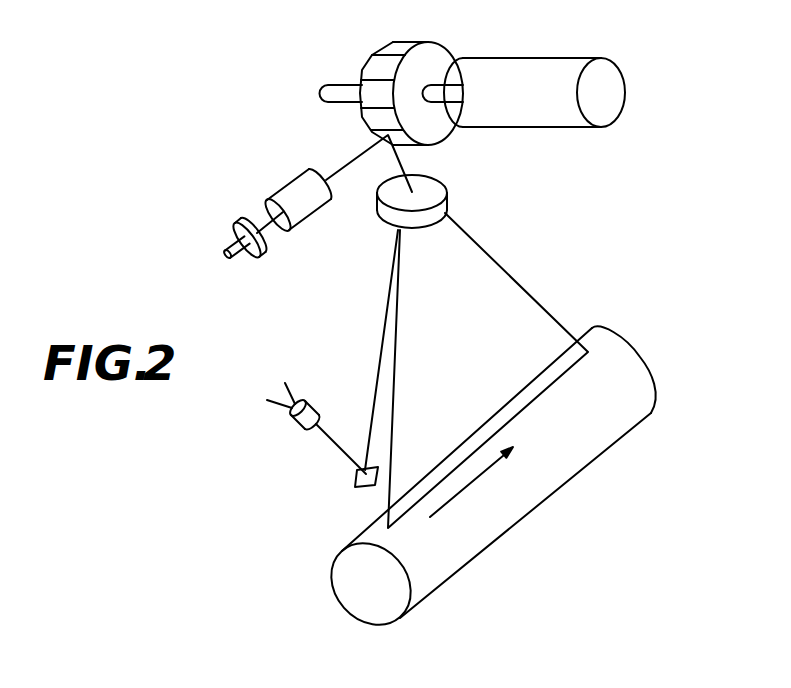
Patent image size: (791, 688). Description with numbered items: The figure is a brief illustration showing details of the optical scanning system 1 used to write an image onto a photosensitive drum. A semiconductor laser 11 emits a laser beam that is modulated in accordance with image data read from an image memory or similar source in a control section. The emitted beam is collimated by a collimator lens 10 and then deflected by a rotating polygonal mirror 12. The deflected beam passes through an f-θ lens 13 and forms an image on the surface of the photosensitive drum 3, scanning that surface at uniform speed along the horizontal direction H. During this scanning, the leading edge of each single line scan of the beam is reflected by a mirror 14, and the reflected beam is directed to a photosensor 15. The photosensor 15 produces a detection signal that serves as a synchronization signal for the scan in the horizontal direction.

The optical scanning system 1 is at (561, 140).
The photosensitive drum 3 is at (637, 350).
The collimator lens 10 is at (298, 192).
The semiconductor laser 11 is at (244, 217).
The polygonal mirror 12 is at (404, 42).
The f-θ lens 13 is at (448, 203).
The mirror 14 is at (363, 487).
The photosensor 15 is at (295, 427).